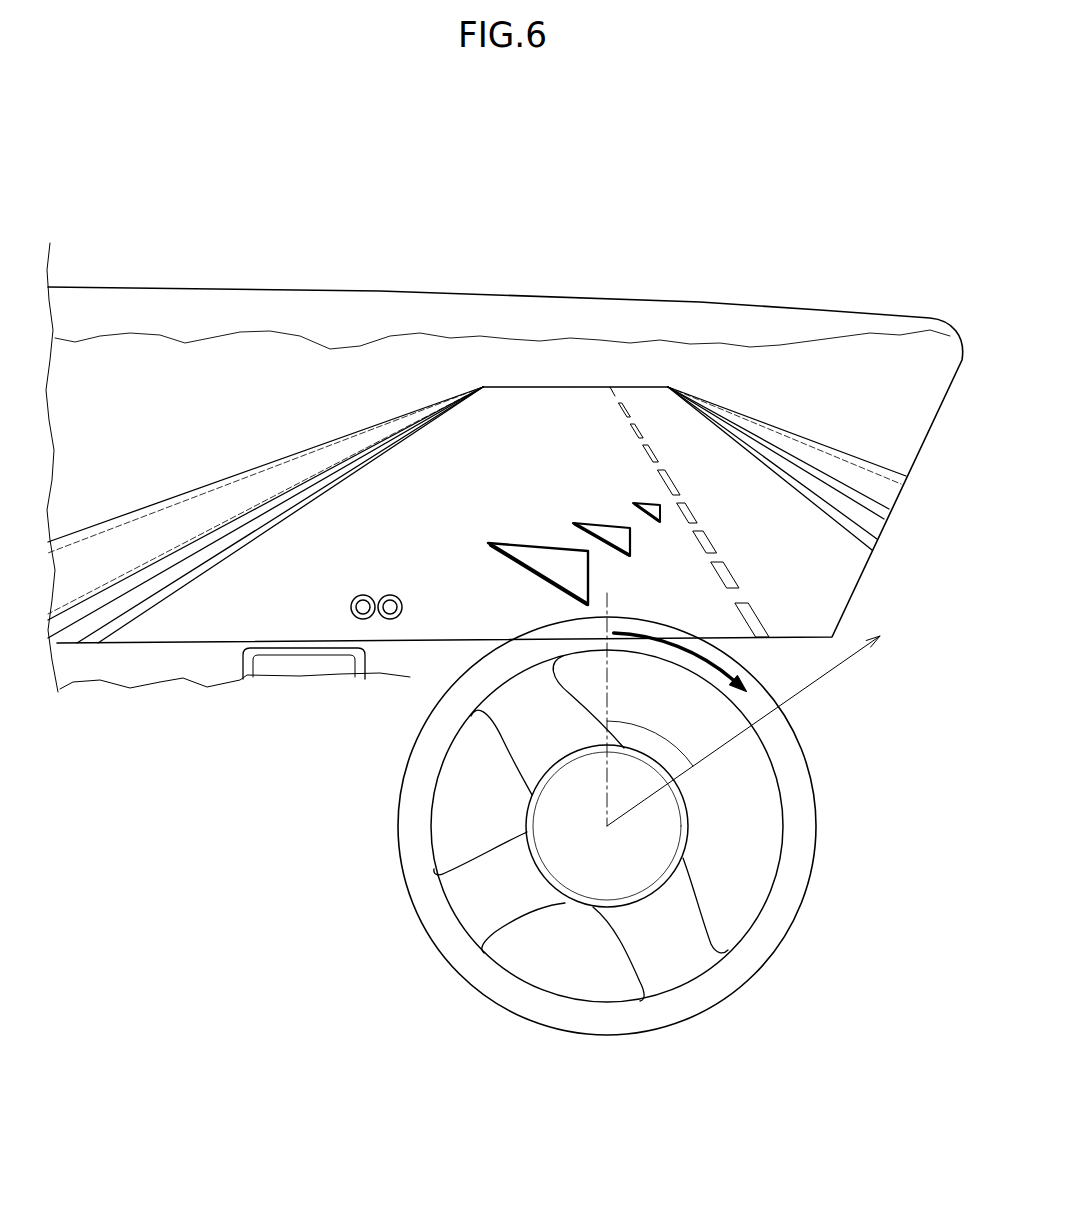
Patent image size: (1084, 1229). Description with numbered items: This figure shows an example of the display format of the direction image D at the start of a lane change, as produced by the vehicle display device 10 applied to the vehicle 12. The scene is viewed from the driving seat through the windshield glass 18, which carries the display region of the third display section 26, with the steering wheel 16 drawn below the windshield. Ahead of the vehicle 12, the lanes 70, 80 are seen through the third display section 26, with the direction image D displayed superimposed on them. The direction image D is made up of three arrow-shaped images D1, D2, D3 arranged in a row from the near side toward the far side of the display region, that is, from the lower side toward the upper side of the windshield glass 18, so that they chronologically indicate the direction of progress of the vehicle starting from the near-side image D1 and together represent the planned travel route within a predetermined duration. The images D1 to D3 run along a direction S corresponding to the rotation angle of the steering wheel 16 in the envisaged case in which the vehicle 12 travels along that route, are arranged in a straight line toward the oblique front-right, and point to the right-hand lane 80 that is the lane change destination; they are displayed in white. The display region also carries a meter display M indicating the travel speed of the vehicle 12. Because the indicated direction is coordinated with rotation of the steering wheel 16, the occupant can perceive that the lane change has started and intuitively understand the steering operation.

The vehicle display device 10 is at (425, 283).
The vehicle 12 is at (455, 245).
The steering wheel 16 is at (818, 835).
The windshield glass 18 is at (502, 260).
The third display section 26 is at (633, 300).
The lane 70 is at (508, 397).
The right-hand lane 80 is at (657, 398).
The direction image D is at (456, 489).
The arrow-shaped image D1 is at (525, 545).
The arrow-shaped image D2 is at (578, 522).
The arrow-shaped image D3 is at (640, 503).
The lane line L is at (182, 587).
The meter display M is at (392, 580).
The direction S is at (813, 683).